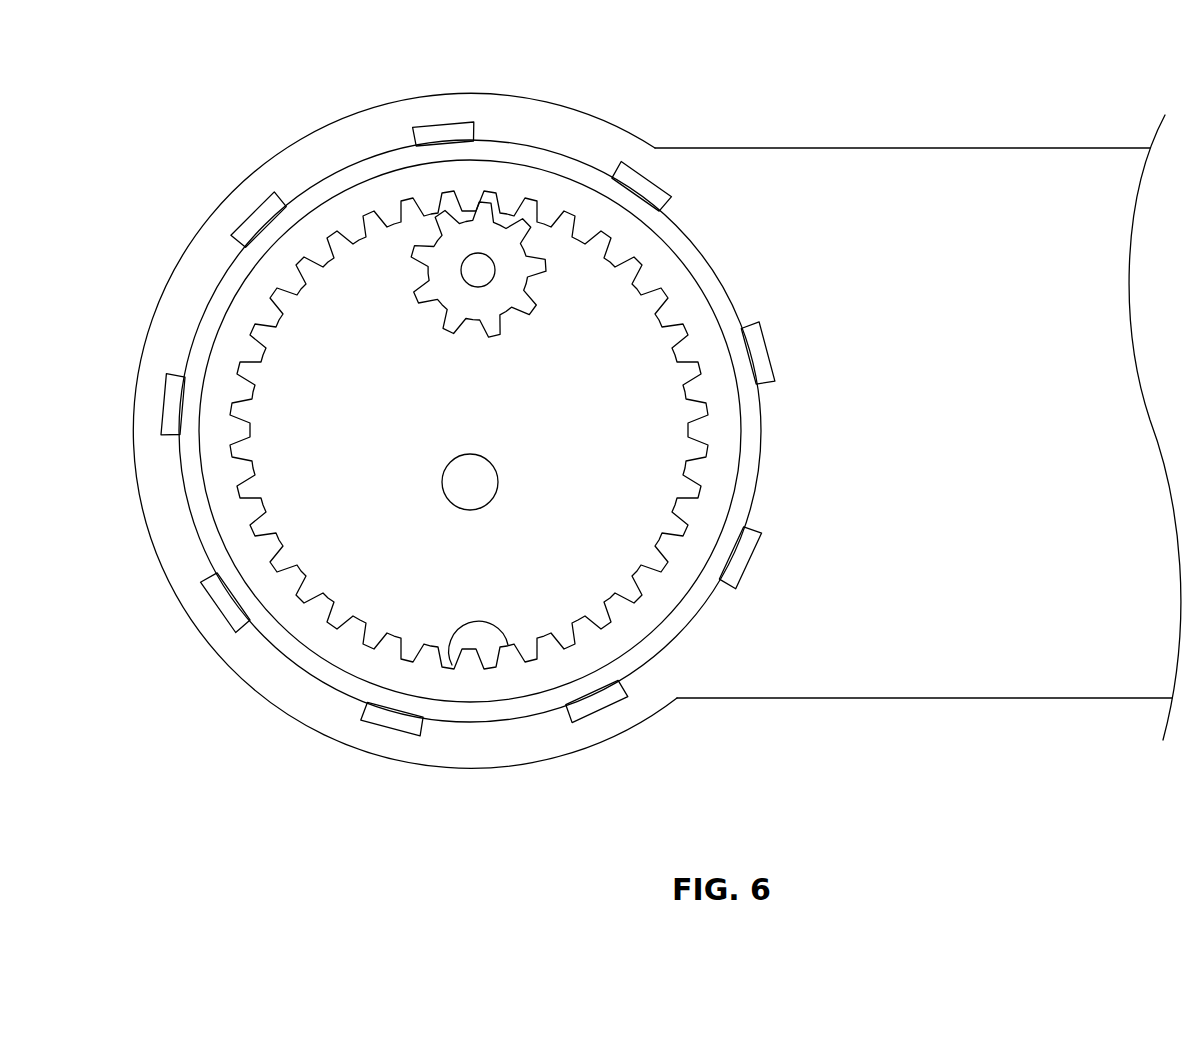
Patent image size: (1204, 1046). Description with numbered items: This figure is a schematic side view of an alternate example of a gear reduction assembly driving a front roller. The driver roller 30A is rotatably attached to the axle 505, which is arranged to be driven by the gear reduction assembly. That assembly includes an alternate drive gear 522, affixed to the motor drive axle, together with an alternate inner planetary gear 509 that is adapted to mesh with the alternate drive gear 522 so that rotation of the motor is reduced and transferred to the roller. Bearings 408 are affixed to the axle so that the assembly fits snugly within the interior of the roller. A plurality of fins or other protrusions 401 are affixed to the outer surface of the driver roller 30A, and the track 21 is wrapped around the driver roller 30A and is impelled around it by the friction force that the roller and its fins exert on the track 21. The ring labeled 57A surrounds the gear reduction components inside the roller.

The bearing 408 is at (381, 97).
The driver roller 30A is at (757, 508).
The inner ring 57A is at (745, 462).
The fins or other protrusions 401 is at (772, 352).
The alternate drive gear 522 is at (493, 235).
The axle 505 is at (470, 482).
The alternate inner planetary gear 509 is at (452, 665).
The track 21 is at (945, 147).